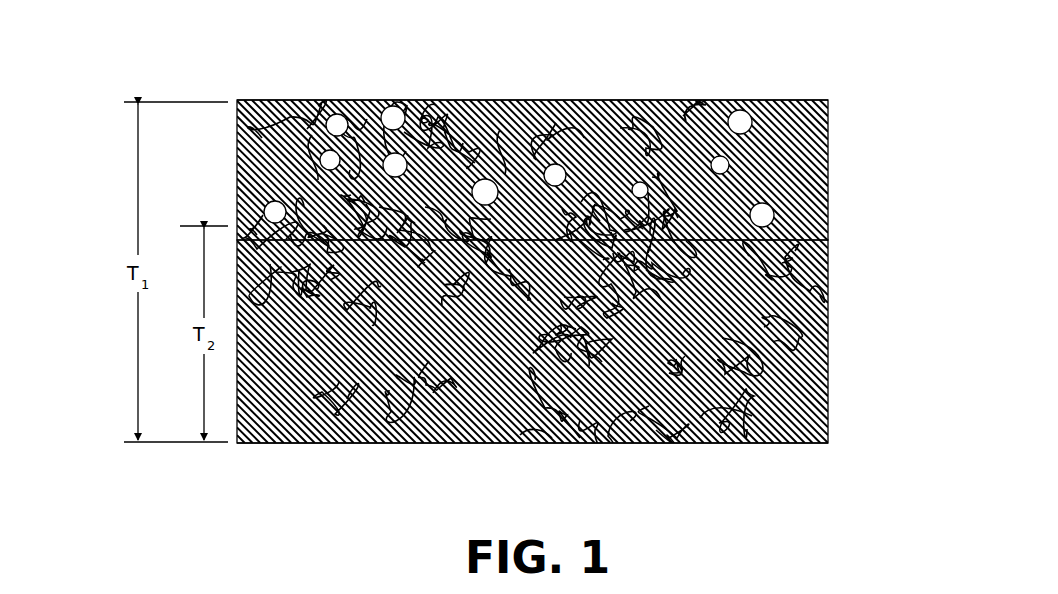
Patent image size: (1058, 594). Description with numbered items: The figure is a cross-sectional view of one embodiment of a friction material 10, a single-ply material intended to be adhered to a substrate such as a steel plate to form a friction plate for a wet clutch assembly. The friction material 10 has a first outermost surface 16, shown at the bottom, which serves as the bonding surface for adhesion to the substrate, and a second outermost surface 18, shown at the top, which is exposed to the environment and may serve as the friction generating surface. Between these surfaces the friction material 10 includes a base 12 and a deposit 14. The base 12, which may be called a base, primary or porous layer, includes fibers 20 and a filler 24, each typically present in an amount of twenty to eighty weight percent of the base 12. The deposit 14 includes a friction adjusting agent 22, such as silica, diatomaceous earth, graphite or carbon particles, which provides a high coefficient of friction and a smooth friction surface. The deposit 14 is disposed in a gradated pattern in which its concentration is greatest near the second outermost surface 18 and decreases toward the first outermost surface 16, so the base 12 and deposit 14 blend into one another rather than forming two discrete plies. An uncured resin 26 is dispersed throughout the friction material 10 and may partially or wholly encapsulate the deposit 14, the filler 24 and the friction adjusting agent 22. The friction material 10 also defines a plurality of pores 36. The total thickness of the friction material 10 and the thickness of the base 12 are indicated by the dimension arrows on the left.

The friction material 10 is at (163, 65).
The base 12 is at (571, 365).
The deposit 14 is at (541, 135).
The first outermost surface 16 is at (597, 449).
The second outermost surface 18 is at (714, 95).
The fibers 20 is at (592, 135).
The friction adjusting agent 22 is at (428, 160).
The filler 24 is at (270, 212).
The uncured resin 26 is at (755, 418).
The pores 36 is at (520, 435).